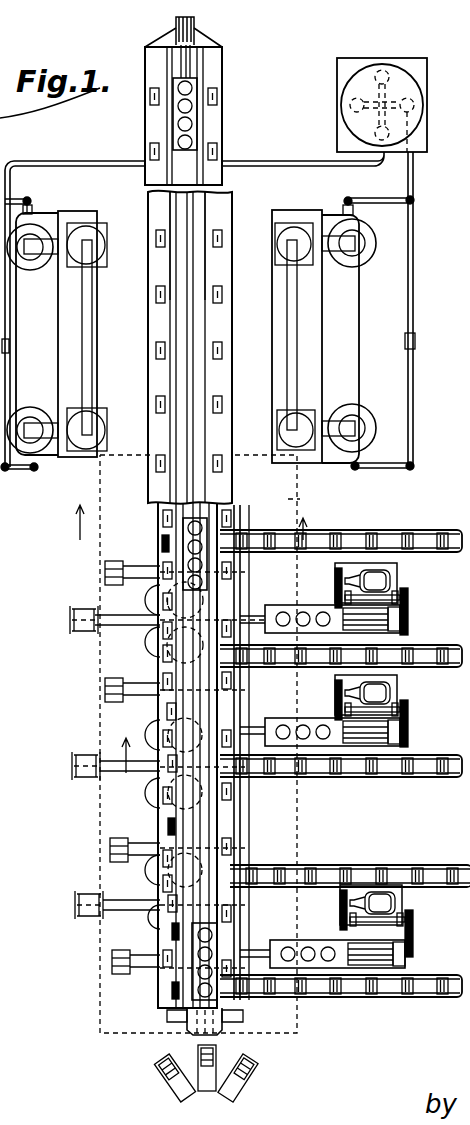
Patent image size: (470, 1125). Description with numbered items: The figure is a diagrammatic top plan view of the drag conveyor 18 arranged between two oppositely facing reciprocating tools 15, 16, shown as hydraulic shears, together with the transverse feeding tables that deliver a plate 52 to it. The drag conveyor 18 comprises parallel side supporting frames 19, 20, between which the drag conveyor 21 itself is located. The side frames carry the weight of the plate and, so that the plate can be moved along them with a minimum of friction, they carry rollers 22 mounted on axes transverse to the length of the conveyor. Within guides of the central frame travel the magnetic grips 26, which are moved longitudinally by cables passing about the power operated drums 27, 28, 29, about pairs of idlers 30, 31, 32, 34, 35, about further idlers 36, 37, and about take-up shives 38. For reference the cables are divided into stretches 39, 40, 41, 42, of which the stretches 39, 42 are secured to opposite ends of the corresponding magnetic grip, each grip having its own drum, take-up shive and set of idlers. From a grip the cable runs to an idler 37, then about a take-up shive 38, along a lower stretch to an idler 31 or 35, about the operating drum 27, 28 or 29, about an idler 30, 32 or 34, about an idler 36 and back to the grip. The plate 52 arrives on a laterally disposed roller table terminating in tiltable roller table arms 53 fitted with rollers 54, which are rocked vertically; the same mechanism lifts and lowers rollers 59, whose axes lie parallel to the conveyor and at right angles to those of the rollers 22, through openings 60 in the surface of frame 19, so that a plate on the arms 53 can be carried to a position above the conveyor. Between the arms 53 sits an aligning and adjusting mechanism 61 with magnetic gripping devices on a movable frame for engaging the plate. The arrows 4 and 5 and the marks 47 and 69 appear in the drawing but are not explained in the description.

The direction arrow 4 is at (122, 747).
The section line 5 is at (196, 515).
The reciprocating tool 15 is at (57, 334).
The reciprocating tool 16 is at (324, 336).
The drag conveyor 18 is at (222, 487).
The supporting frame 19 is at (158, 443).
The supporting frame 20 is at (222, 433).
The drag conveyor 21 is at (185, 485).
The rollers 22 is at (218, 155).
The magnetic grips 26 is at (197, 118).
The power operated drum 27 is at (78, 636).
The power operated drum 28 is at (84, 782).
The power operated drum 29 is at (86, 920).
The idler 30 is at (166, 599).
The idler 31 is at (172, 644).
The idler 32 is at (170, 733).
The idler 34 is at (160, 866).
The idler 35 is at (160, 796).
The idler 36 is at (176, 22).
The idler 37 is at (192, 1034).
The take-up shives 38 is at (162, 1070).
The cable stretch 39 is at (127, 755).
The cable stretch 40 is at (140, 620).
The cable stretch 41 is at (172, 201).
The cable stretch 42 is at (200, 213).
The rollers 47 is at (304, 616).
The plate 52 is at (213, 744).
The tiltable roller table arms 53 is at (392, 530).
The rollers 54 is at (368, 532).
The rollers 59 is at (163, 518).
The openings 60 is at (162, 545).
The aligning and adjusting mechanism 61 is at (316, 607).
The motor 69 is at (374, 760).